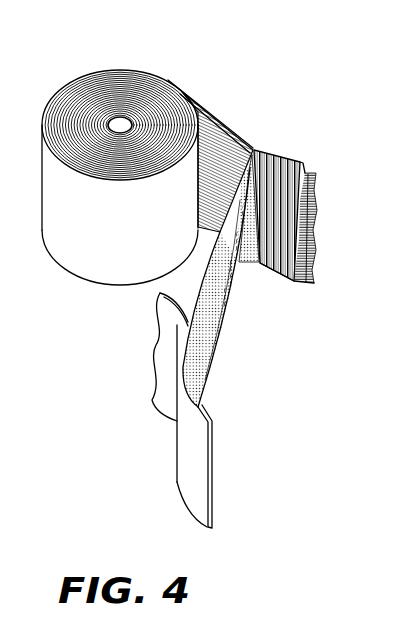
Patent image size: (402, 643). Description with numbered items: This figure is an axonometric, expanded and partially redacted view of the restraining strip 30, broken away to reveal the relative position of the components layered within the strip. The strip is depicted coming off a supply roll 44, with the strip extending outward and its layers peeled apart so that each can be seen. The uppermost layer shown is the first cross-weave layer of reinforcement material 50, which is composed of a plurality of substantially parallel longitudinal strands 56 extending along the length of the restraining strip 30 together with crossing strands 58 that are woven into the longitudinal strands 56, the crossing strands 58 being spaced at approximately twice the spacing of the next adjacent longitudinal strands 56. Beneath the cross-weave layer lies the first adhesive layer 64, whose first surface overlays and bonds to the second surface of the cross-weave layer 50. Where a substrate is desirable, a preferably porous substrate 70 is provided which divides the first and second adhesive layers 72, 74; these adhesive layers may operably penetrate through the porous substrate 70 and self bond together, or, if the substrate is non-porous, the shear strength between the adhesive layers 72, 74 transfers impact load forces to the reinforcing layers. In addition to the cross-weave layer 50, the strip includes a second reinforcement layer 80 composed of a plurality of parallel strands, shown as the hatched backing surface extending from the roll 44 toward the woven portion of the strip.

The restraining strip 30 is at (319, 238).
The tape roll 44 is at (123, 71).
The first cross-weave layer of reinforcement material 50 is at (305, 283).
The longitudinal strands 56 is at (307, 193).
The crossing strands 58 is at (272, 268).
The first adhesive layer 64 is at (250, 176).
The substrate 70 is at (234, 303).
The first adhesive layer 72 is at (228, 121).
The second adhesive layer 74 is at (204, 298).
The second reinforcement layer 80 is at (218, 148).